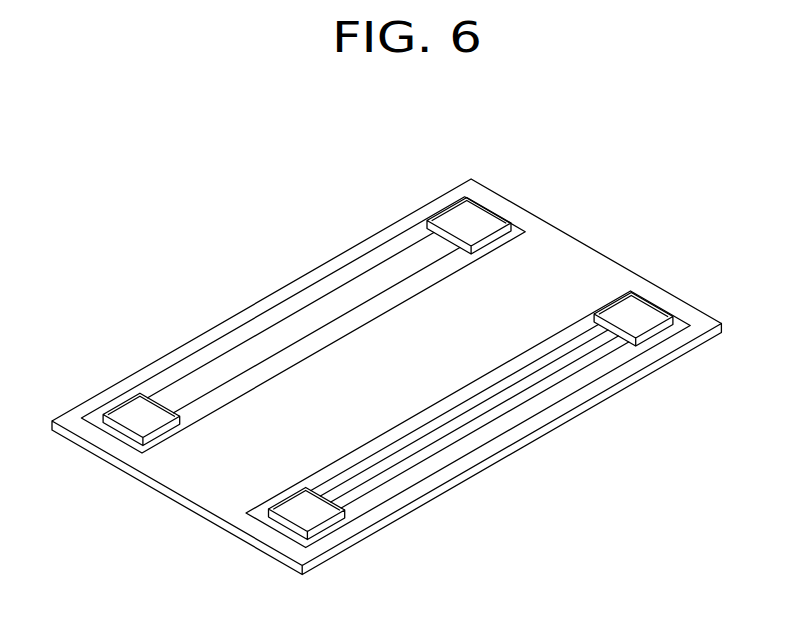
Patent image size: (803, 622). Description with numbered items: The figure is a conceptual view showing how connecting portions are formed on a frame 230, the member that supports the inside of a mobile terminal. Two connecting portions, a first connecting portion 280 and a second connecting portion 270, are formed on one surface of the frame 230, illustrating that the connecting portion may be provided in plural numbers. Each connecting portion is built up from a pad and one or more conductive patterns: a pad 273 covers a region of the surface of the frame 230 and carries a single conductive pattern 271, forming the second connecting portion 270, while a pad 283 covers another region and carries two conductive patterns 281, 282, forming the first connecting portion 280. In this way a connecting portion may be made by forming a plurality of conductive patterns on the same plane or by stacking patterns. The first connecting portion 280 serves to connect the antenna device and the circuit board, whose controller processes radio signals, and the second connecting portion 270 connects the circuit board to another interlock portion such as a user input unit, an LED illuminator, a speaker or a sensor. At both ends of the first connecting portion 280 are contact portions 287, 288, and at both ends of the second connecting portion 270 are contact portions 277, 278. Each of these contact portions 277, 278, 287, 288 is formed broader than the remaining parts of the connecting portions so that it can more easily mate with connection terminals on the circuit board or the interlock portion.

The frame 230 is at (578, 250).
The second connecting portion 270 is at (280, 287).
The conductive pattern 271 is at (288, 327).
The pad 273 is at (367, 265).
The contact portion 277 is at (462, 215).
The contact portion 278 is at (107, 389).
The first connecting portion 280 is at (499, 449).
The conductive pattern 281 is at (405, 463).
The conductive pattern 282 is at (475, 402).
The pad 283 is at (575, 382).
The contact portion 287 is at (650, 322).
The contact portion 288 is at (344, 543).